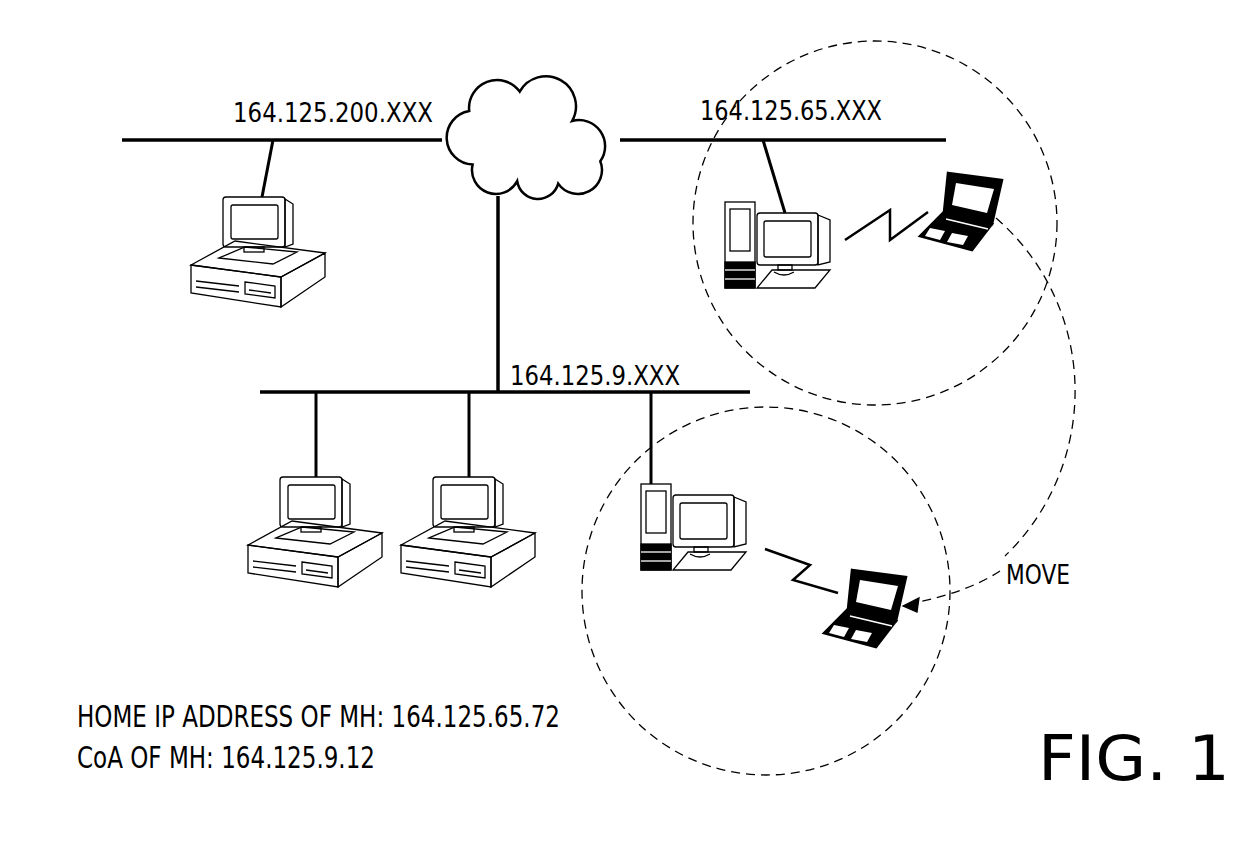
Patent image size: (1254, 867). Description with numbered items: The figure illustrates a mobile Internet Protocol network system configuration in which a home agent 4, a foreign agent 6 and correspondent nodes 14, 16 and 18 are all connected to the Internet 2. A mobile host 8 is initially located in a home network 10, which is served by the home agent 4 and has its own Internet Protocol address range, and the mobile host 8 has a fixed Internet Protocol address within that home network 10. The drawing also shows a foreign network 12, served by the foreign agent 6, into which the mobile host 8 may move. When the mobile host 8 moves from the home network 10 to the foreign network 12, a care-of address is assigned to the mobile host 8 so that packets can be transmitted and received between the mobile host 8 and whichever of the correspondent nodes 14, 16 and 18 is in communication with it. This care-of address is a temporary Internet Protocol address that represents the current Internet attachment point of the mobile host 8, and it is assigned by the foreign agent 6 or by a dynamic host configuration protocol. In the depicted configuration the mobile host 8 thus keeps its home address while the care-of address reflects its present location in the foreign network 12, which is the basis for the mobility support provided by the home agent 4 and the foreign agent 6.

The Internet 2 is at (572, 88).
The home agent 4 is at (813, 208).
The foreign agent 6 is at (709, 495).
The mobile host 8 is at (975, 173).
The home network 10 is at (955, 57).
The foreign network 12 is at (897, 463).
The correspondent node 14 is at (295, 213).
The correspondent node 16 is at (350, 497).
The correspondent node 18 is at (503, 497).